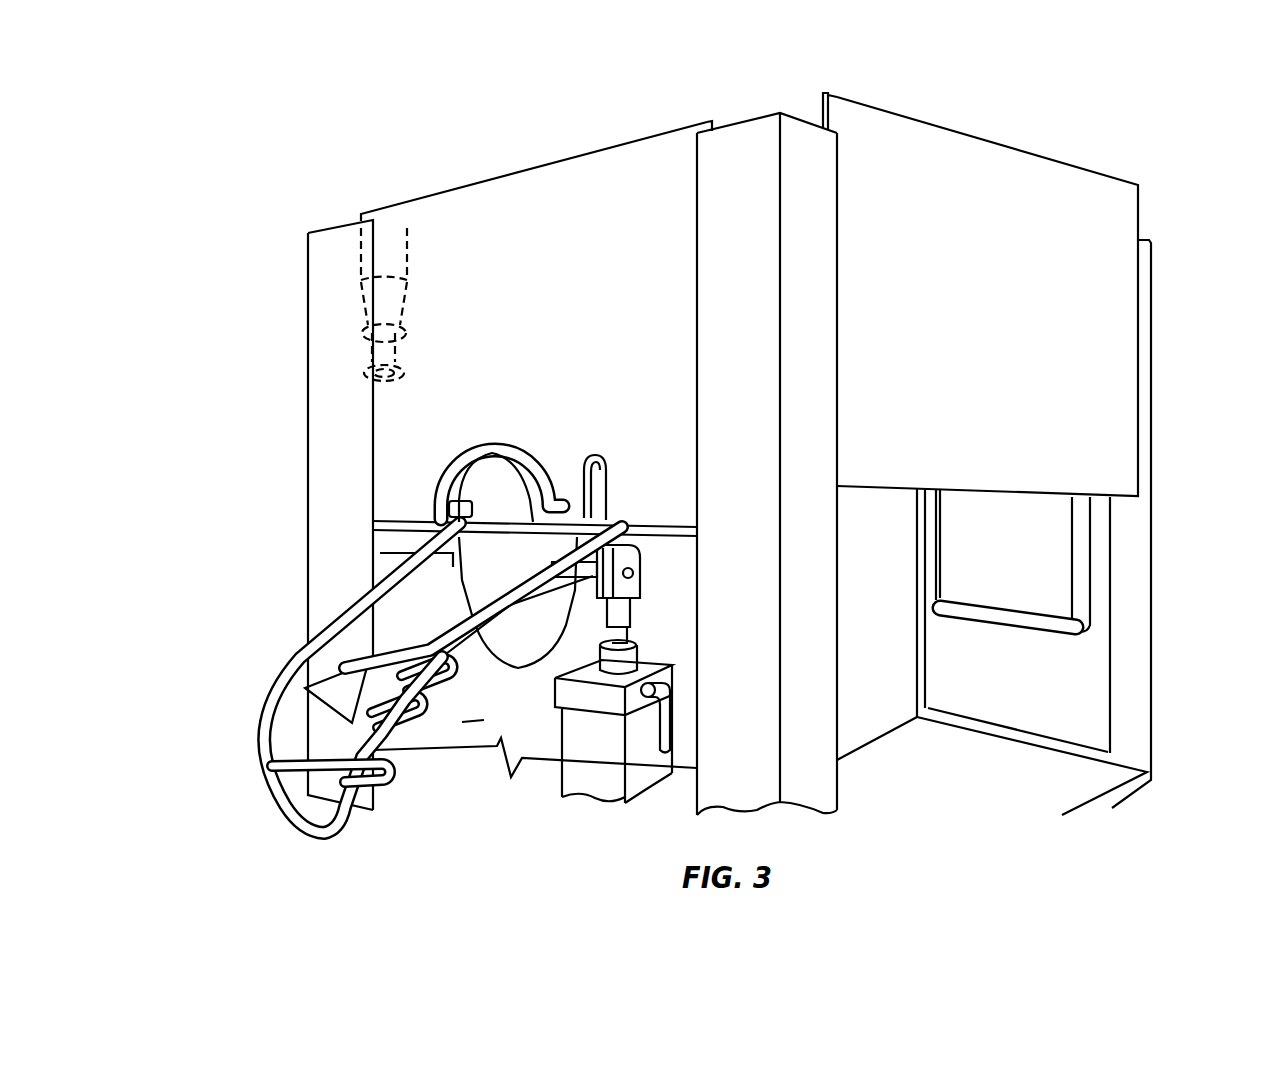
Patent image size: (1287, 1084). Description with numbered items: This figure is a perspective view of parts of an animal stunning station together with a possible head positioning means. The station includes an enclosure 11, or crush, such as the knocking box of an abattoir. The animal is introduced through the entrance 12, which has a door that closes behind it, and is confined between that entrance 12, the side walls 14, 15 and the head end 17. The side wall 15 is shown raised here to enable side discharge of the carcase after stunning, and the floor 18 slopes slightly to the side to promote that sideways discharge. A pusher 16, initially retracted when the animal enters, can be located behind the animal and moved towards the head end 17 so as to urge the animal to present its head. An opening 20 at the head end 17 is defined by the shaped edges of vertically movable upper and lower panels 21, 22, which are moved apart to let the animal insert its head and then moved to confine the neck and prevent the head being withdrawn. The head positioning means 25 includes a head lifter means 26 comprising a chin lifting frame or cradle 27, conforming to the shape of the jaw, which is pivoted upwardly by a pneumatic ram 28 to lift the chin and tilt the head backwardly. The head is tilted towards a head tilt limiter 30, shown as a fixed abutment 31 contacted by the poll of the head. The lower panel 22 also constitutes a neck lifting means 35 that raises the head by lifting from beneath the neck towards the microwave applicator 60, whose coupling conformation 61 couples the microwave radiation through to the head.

The enclosure 11 is at (1166, 541).
The entrance 12 is at (1040, 687).
The side wall 14 is at (890, 604).
The side wall 15 is at (1004, 317).
The pusher 16 is at (998, 610).
The head end 17 is at (461, 254).
The floor 18 is at (962, 793).
The opening 20 is at (508, 537).
The upper panel 21 is at (553, 299).
The lower panel 22 is at (532, 734).
The head positioning means 25 is at (388, 793).
The head lifter means 26 is at (262, 684).
The chin lifting frame or cradle 27 is at (453, 687).
The pneumatic ram 28 is at (654, 644).
The head tilt limiter 30 is at (519, 445).
The fixed abutment 31 is at (487, 447).
The neck lifting means 35 is at (473, 724).
The microwave applicator 60 is at (351, 325).
The coupling conformation 61 is at (360, 378).